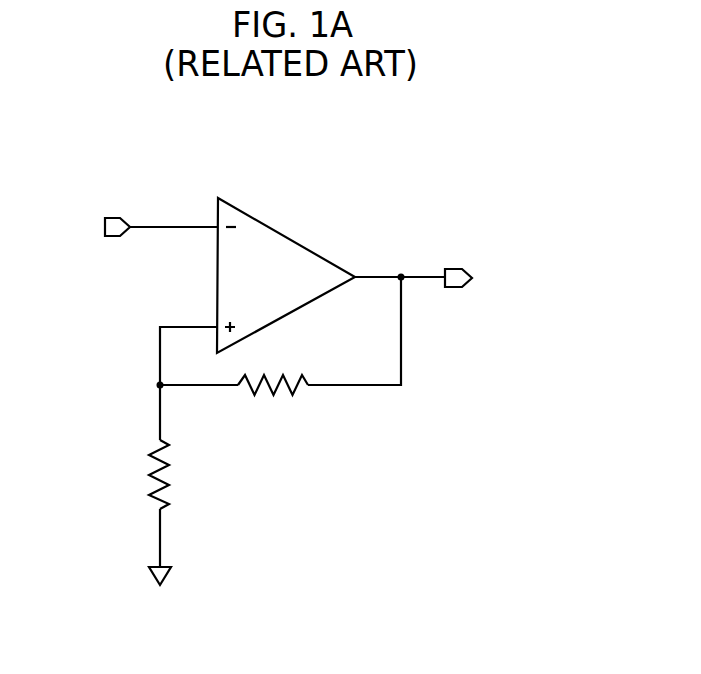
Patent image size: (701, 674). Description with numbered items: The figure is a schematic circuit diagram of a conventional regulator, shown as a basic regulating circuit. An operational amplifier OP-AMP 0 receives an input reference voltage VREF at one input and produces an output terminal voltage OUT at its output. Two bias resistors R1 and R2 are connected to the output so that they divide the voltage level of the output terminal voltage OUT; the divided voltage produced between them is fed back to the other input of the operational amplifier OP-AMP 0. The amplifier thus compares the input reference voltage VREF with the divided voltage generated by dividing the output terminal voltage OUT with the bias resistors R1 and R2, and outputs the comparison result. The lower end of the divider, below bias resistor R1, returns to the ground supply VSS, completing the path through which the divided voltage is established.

The operational amplifier 0 is at (331, 275).
The bias resistor R1 is at (178, 476).
The bias resistor R2 is at (273, 403).
The input reference voltage VREF is at (126, 226).
The output terminal voltage OUT is at (462, 277).
The ground voltage VSS is at (157, 594).